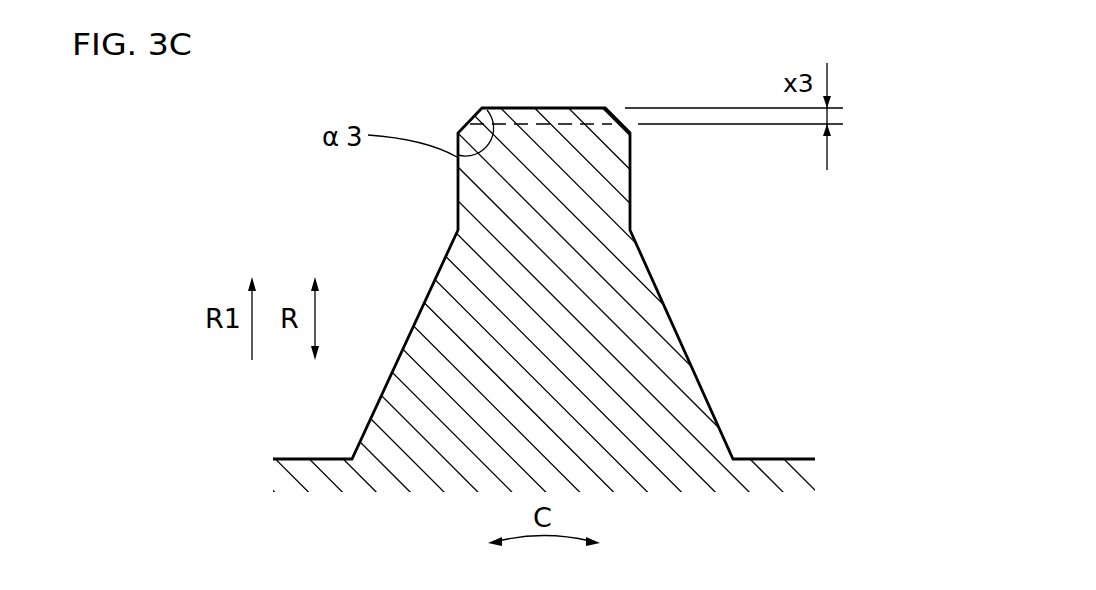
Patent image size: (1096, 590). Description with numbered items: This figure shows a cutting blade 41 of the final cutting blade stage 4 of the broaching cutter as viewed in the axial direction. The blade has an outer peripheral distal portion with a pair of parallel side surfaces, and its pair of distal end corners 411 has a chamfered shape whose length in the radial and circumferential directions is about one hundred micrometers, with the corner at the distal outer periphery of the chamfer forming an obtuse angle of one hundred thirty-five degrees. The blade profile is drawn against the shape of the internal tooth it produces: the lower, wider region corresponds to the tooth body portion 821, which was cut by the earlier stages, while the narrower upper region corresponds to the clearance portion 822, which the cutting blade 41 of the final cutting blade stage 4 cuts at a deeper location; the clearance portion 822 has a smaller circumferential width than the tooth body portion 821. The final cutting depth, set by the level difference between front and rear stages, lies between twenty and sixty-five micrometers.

The final cutting blade stage 4 is at (515, 88).
The cutting blade 41 is at (533, 197).
The distal end corner 411 is at (625, 127).
The clearance portion 822 is at (583, 183).
The tooth body portion 821 is at (598, 432).